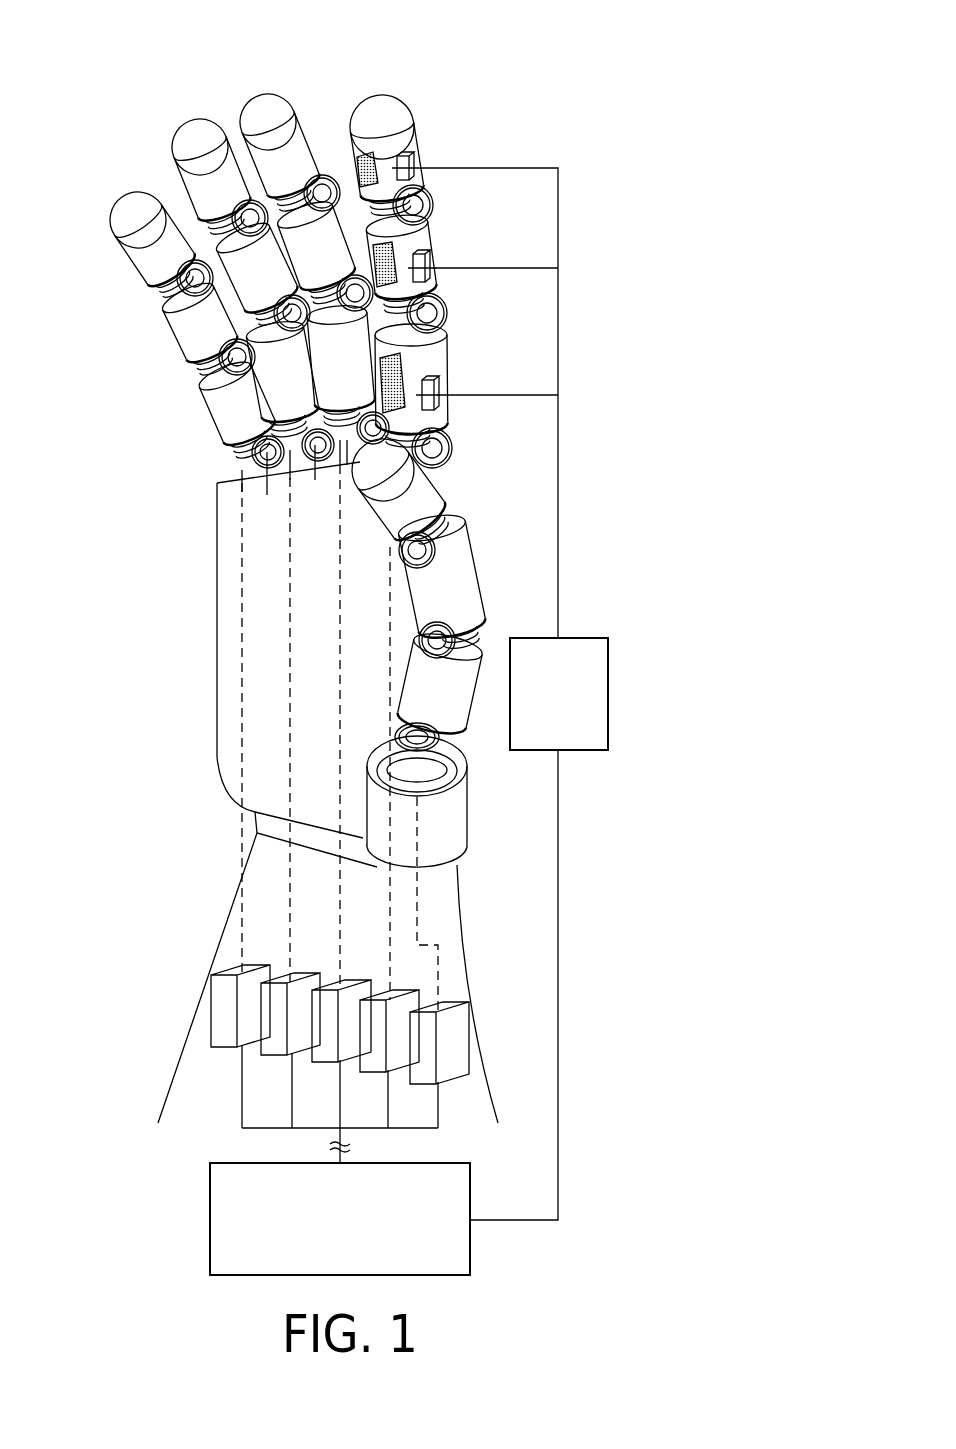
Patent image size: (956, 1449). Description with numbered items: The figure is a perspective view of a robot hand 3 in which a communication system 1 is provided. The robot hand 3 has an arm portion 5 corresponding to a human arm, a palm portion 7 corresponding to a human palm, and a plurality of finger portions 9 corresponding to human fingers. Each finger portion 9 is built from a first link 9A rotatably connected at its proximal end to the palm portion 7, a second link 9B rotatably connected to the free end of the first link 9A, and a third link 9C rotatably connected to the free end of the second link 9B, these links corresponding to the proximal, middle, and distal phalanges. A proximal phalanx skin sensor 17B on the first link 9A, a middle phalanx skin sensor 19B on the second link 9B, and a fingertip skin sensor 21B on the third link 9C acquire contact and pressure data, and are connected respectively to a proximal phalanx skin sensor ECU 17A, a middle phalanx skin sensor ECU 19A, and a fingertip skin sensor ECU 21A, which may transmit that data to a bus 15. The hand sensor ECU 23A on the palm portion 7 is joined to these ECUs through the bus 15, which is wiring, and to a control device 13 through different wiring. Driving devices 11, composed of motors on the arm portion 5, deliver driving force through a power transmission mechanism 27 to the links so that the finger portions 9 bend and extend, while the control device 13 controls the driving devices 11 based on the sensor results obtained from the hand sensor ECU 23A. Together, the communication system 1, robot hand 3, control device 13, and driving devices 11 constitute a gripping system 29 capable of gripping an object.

The communication system 1 is at (580, 283).
The robot hand 3 is at (158, 100).
The arm portion 5 is at (185, 1020).
The palm portion 7 is at (217, 625).
The finger portion 9 is at (363, 110).
The first link 9A is at (447, 345).
The second link 9B is at (413, 233).
The third link 9C is at (387, 113).
The driving device 11 is at (280, 980).
The control device 13 is at (209, 1226).
The bus 15 is at (560, 545).
The proximal phalanx skin sensor ECU 17A is at (440, 405).
The proximal phalanx skin sensor 17B is at (405, 368).
The middle phalanx skin sensor ECU 19A is at (428, 268).
The middle phalanx skin sensor 19B is at (397, 247).
The fingertip skin sensor ECU 21A is at (413, 162).
The fingertip skin sensor 21B is at (372, 157).
The hand sensor ECU 23A is at (608, 680).
The power transmission mechanism 27 is at (242, 700).
The gripping system 29 is at (156, 379).